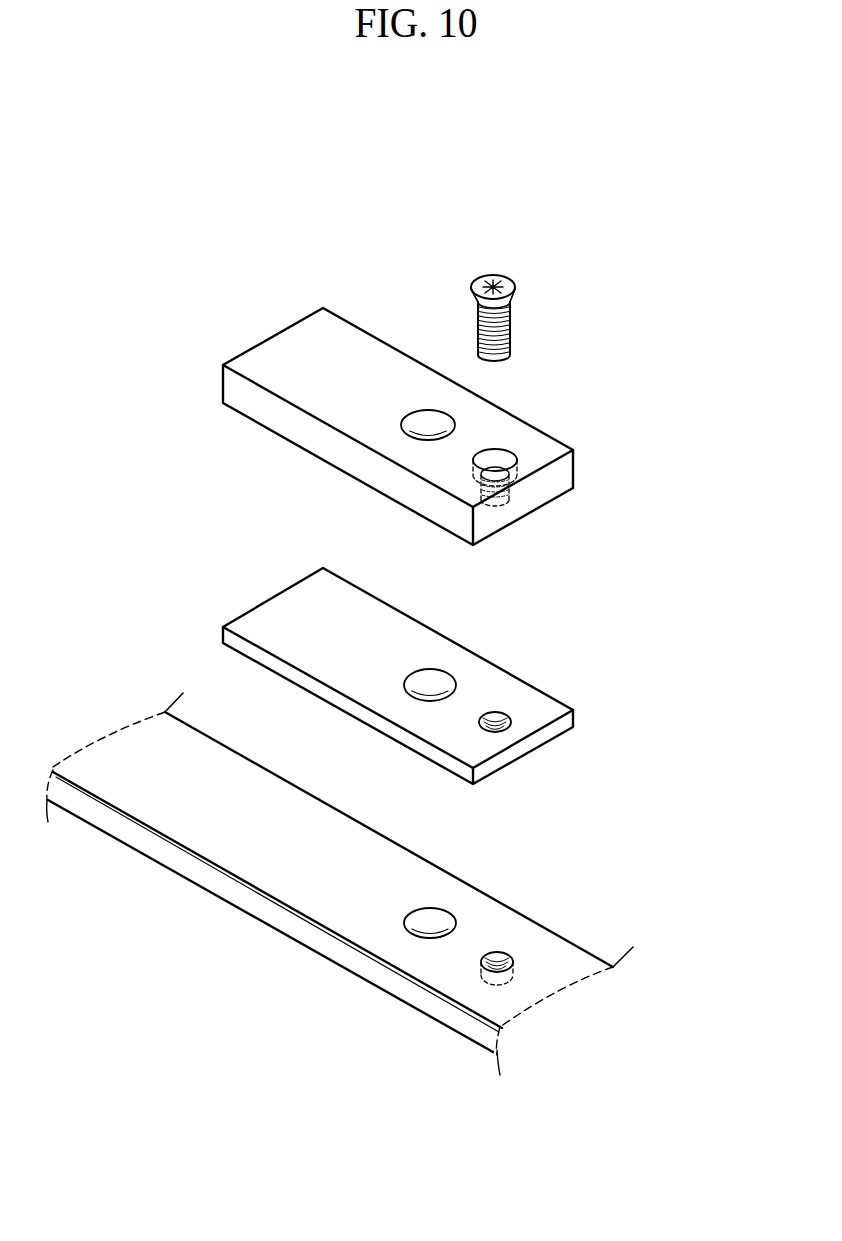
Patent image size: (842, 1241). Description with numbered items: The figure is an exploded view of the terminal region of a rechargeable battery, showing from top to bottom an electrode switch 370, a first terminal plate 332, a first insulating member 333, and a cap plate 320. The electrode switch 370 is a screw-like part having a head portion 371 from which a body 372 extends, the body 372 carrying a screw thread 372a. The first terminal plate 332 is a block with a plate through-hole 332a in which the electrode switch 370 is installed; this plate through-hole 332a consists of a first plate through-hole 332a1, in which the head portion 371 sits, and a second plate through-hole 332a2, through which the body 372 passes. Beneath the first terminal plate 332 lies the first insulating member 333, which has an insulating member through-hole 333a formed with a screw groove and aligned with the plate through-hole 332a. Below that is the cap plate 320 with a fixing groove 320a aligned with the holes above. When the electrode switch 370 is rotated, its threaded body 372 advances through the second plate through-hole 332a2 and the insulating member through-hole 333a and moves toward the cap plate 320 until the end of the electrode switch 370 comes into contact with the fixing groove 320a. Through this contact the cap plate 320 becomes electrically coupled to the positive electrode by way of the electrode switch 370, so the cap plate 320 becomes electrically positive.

The electrode switch 370 is at (539, 287).
The head portion 371 is at (517, 285).
The body 372 is at (500, 307).
The screw thread 372a is at (503, 347).
The first terminal plate 332 is at (495, 437).
The plate through-hole 332a is at (618, 461).
The first plate through-hole 332a1 is at (497, 457).
The second plate through-hole 332a2 is at (497, 500).
The first insulating member 333 is at (443, 656).
The insulating member through-hole 333a is at (510, 718).
The cap plate 320 is at (340, 862).
The fixing groove 320a is at (507, 959).